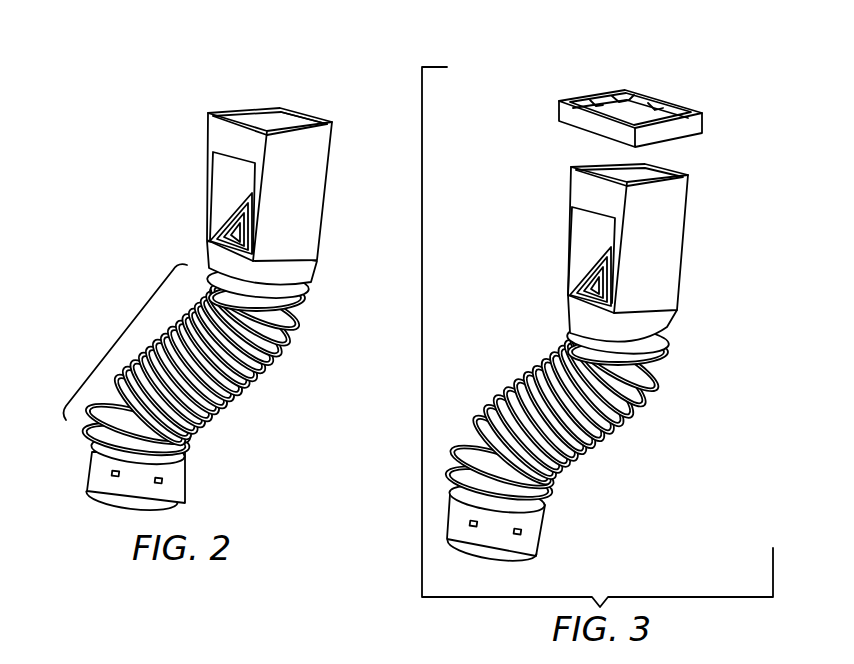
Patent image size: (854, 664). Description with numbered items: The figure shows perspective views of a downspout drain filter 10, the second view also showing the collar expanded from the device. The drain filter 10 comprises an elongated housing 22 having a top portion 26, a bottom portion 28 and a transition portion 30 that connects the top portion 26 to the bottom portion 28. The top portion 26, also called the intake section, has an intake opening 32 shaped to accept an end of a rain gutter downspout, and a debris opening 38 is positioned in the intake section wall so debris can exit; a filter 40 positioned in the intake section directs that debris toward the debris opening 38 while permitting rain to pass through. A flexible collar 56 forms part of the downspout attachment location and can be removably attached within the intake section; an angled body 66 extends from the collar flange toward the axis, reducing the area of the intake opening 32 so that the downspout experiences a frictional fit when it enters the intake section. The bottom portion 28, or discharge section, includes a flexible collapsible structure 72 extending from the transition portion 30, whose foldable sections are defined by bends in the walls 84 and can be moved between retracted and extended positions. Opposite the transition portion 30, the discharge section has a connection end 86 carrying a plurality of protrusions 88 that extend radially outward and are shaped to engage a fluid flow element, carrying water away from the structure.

In FIG. 2, the downspout drain filter 10 is at (84, 204).
In FIG. 3, the downspout drain filter 10 is at (713, 413).
In FIG. 2, the elongated housing 22 is at (311, 130).
In FIG. 2, the top portion 26 is at (339, 212).
In FIG. 3, the top portion 26 is at (709, 251).
In FIG. 2, the bottom portion 28 is at (274, 380).
In FIG. 3, the bottom portion 28 is at (627, 462).
In FIG. 2, the transition portion 30 is at (330, 282).
In FIG. 3, the transition portion 30 is at (679, 333).
In FIG. 2, the intake opening 32 is at (289, 116).
In FIG. 3, the intake opening 32 is at (663, 172).
In FIG. 2, the debris opening 38 is at (230, 186).
In FIG. 3, the debris opening 38 is at (592, 226).
In FIG. 2, the filter 40 is at (218, 229).
In FIG. 3, the filter 40 is at (587, 278).
In FIG. 3, the flexible collar 56 is at (586, 121).
In FIG. 3, the angled body 66 is at (636, 104).
In FIG. 2, the flexible collapsible structure 72 is at (112, 333).
In FIG. 2, the walls 84 is at (90, 452).
In FIG. 3, the walls 84 is at (500, 471).
In FIG. 2, the connection end 86 is at (190, 480).
In FIG. 3, the connection end 86 is at (553, 542).
In FIG. 2, the protrusions 88 is at (110, 474).
In FIG. 3, the protrusions 88 is at (517, 536).